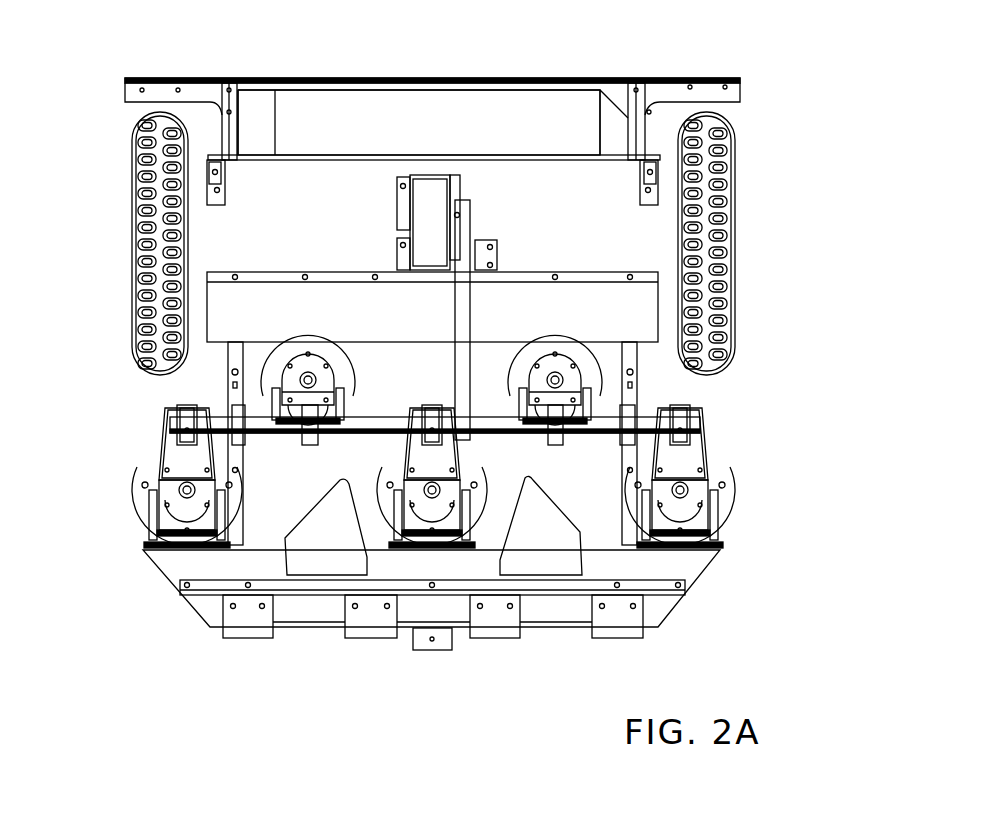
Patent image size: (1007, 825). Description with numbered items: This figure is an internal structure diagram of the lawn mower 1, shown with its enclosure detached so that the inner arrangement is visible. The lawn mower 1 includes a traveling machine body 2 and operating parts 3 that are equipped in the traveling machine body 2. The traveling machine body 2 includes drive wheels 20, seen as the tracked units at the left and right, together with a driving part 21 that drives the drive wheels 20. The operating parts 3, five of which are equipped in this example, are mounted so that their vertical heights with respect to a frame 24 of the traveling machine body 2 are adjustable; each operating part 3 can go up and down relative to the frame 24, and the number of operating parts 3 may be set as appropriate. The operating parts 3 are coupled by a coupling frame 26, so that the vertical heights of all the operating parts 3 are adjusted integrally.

The lawn mower 1 is at (805, 72).
The traveling machine body 2 is at (603, 78).
The operating parts 3 is at (226, 381).
The drive wheels 20 is at (131, 191).
The driving part 21 is at (317, 157).
The frame 24 is at (458, 582).
The coupling frame 26 is at (340, 437).